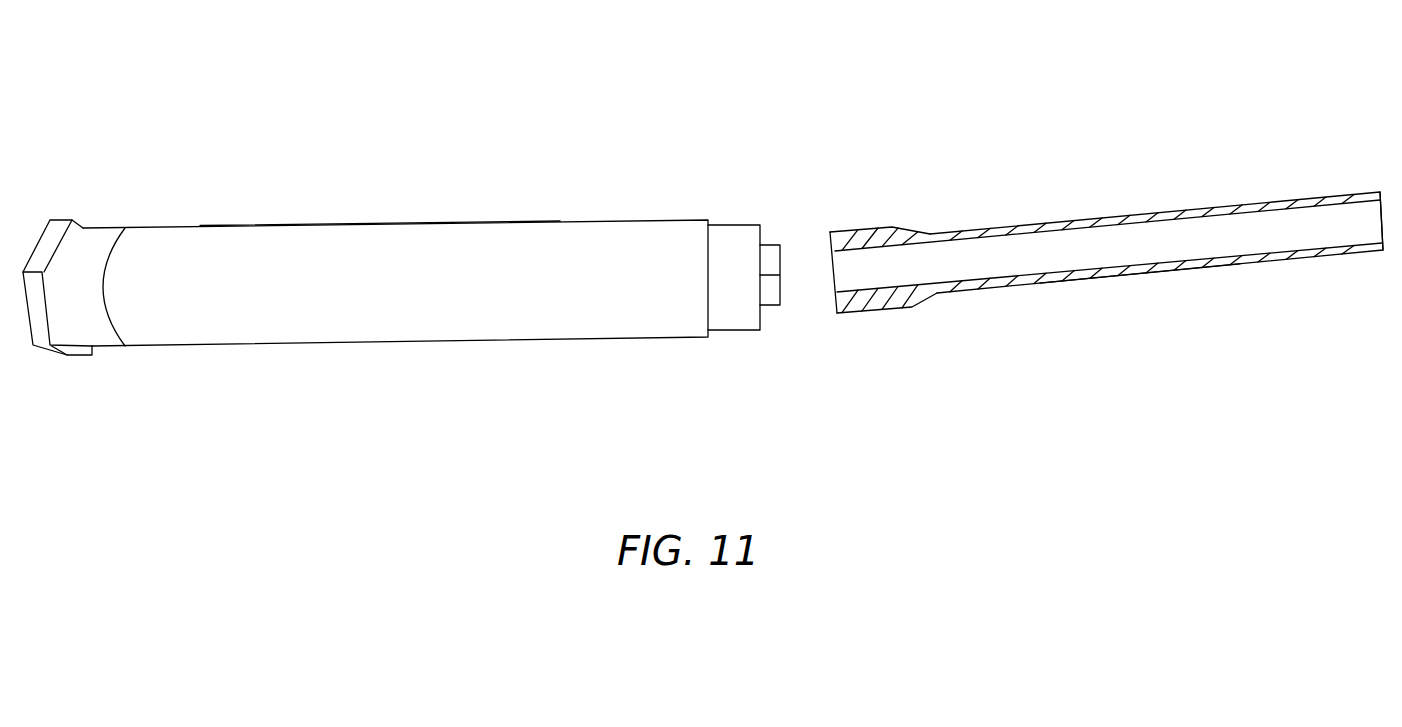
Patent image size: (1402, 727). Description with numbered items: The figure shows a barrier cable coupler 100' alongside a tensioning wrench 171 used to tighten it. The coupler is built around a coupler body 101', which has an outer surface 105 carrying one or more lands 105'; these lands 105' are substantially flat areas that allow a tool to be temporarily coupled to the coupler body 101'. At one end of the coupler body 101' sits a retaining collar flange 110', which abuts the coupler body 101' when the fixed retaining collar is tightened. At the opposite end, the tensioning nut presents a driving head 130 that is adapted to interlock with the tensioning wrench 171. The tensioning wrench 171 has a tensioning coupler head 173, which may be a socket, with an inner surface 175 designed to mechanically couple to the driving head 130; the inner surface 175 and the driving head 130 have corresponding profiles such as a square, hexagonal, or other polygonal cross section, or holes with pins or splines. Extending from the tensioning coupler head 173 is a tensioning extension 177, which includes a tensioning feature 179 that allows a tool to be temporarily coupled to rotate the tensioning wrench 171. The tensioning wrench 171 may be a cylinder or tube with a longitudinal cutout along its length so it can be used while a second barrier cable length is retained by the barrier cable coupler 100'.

The barrier cable coupler 100' is at (317, 74).
The coupler body 101' is at (395, 324).
The outer surface 105 is at (380, 184).
The land 105' is at (431, 242).
The retaining collar flange 110' is at (53, 240).
The driving head 130 is at (772, 306).
The tensioning wrench 171 is at (1117, 188).
The tensioning coupler head 173 is at (890, 228).
The inner surface 175 is at (830, 255).
The tensioning extension 177 is at (1153, 273).
The tensioning feature 179 is at (1295, 198).